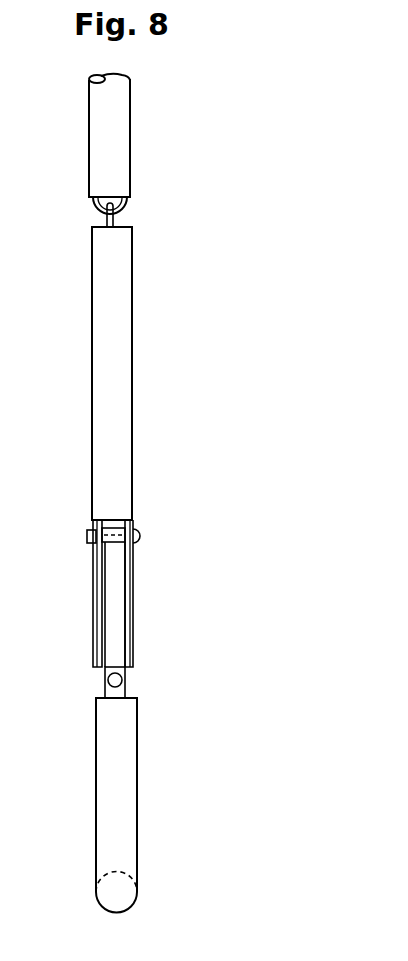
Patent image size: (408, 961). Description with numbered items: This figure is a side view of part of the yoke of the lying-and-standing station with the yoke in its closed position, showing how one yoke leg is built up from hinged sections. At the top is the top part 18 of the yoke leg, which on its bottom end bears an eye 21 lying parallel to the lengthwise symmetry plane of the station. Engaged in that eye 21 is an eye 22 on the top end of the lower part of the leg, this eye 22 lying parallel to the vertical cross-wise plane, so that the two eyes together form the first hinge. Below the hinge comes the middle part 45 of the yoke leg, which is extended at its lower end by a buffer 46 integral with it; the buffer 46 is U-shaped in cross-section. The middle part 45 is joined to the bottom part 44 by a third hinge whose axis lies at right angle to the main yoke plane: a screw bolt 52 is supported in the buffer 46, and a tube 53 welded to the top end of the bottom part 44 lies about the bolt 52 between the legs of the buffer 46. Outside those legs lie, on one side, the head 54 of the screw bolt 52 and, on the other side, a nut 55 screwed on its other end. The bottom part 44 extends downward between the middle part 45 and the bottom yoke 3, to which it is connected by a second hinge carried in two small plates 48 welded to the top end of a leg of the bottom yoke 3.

The bottom yoke 3 is at (122, 790).
The top part of yoke leg 18 is at (120, 133).
The eye 21 is at (127, 204).
The eye 22 is at (104, 219).
The bottom part 44 is at (115, 612).
The middle part 45 is at (118, 332).
The buffer 46 is at (95, 583).
The small plates 48 is at (118, 692).
The screw bolt 52 is at (73, 527).
The tube 53 is at (117, 527).
The head 54 is at (141, 538).
The nut 55 is at (92, 537).